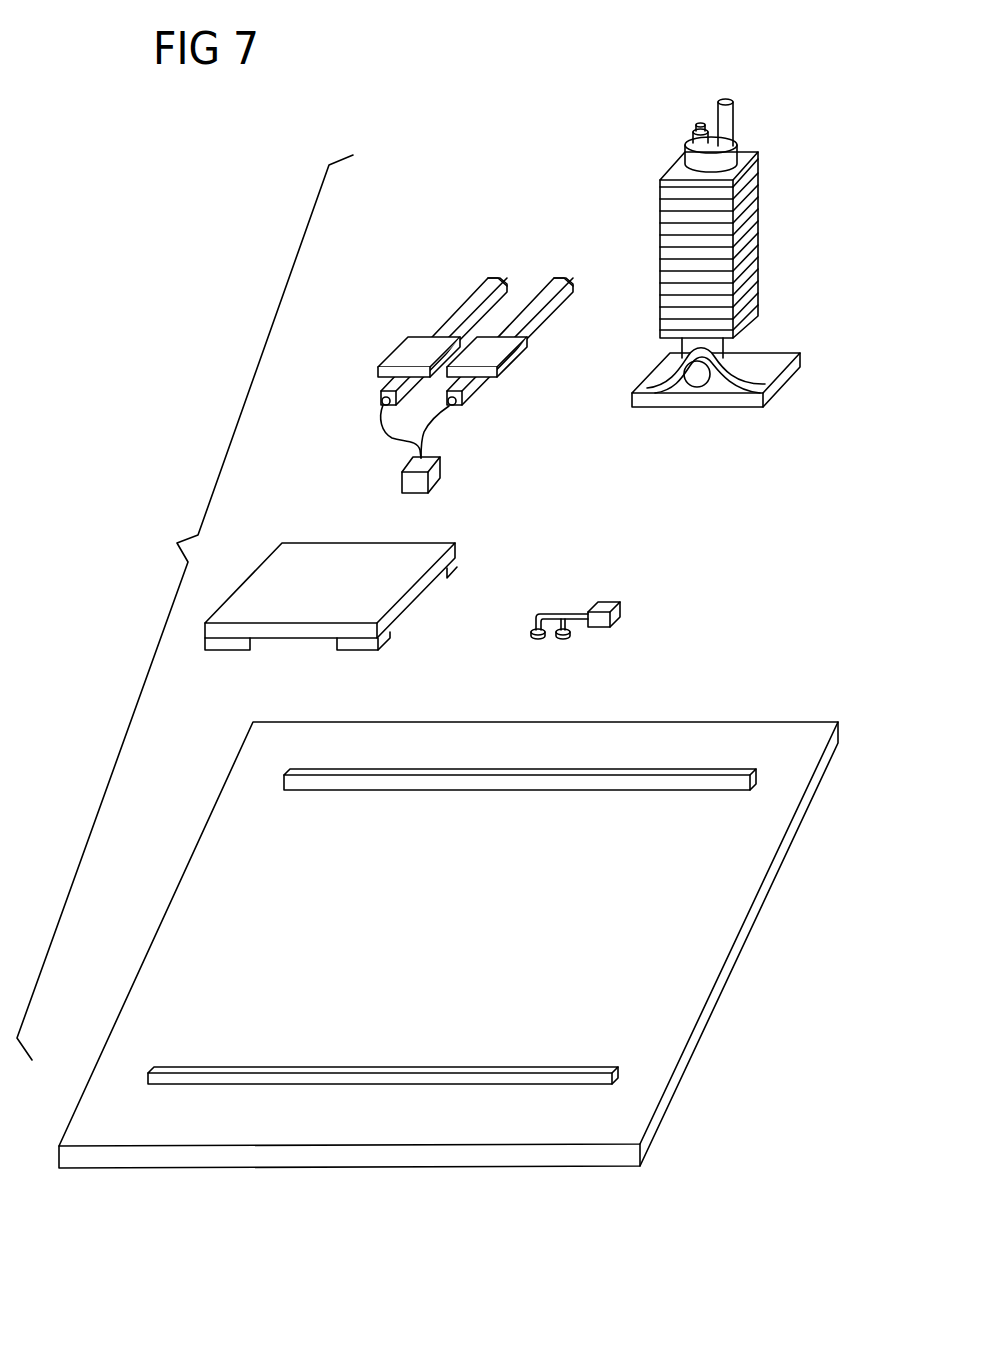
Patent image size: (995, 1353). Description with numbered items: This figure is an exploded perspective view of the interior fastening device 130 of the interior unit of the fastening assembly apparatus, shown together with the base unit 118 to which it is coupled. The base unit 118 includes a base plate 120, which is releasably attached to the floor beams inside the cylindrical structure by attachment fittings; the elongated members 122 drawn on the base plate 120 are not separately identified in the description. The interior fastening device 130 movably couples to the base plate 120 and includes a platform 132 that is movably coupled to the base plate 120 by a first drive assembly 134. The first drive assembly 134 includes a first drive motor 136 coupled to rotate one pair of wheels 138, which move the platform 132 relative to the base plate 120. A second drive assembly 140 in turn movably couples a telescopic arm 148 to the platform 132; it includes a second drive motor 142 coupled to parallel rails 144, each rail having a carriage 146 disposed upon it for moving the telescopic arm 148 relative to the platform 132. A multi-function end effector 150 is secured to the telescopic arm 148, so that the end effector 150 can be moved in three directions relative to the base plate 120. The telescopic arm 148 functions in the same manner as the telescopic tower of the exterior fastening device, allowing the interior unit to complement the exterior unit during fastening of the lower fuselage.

The base unit 118 is at (466, 945).
The base plate 120 is at (720, 915).
The guide rails 122 is at (752, 770).
The interior fastening device 130 is at (356, 560).
The platform 132 is at (387, 588).
The first drive assembly 134 is at (606, 604).
The first drive motor 136 is at (620, 608).
The wheels 138 is at (562, 641).
The second drive assembly 140 is at (454, 355).
The second drive motor 142 is at (441, 470).
The parallel rails 144 is at (507, 278).
The carriage 146 is at (483, 343).
The telescopic arm 148 is at (763, 243).
The multi-function end effector 150 is at (687, 152).